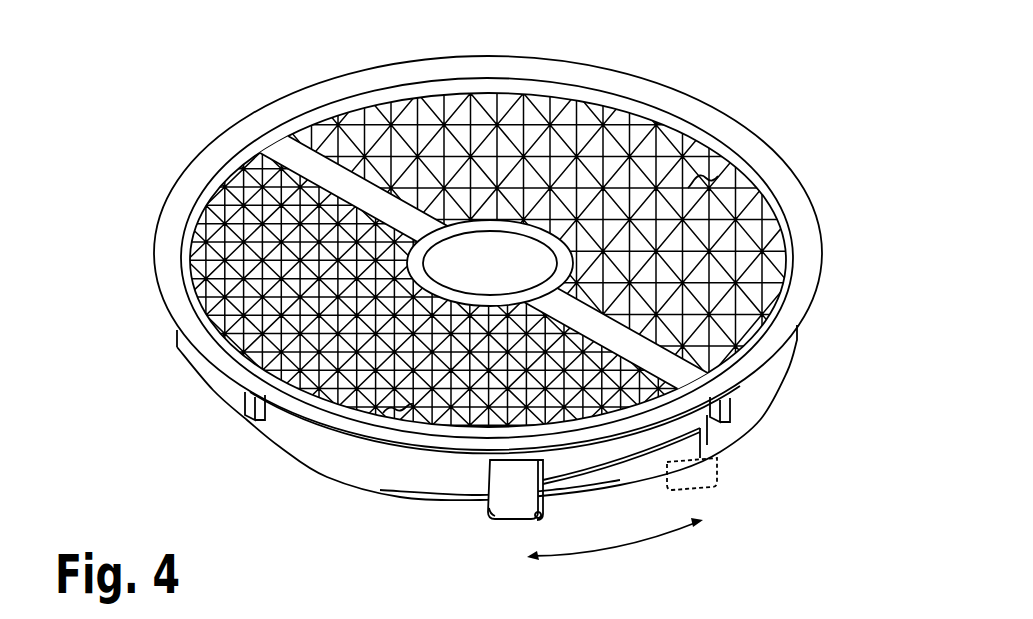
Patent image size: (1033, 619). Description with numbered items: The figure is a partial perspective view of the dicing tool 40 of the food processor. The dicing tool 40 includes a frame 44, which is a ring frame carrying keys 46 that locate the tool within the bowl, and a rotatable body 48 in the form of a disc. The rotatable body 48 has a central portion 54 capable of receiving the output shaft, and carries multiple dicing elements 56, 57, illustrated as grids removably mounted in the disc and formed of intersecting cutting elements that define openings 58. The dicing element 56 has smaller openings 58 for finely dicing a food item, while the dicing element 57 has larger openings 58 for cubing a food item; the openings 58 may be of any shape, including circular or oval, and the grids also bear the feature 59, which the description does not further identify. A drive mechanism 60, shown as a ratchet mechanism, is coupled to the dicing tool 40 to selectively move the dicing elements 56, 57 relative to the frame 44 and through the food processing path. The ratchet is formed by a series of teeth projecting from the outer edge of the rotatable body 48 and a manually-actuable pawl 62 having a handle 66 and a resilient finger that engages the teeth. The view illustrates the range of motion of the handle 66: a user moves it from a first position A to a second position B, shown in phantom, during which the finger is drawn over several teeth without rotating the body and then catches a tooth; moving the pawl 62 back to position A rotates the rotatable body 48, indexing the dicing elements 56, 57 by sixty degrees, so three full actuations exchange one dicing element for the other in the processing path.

The dicing tool 40 is at (180, 87).
The frame 44 is at (181, 367).
The keys 46 is at (247, 407).
The rotatable body 48 is at (683, 378).
The central portion 54 is at (477, 245).
The dicing element 56 is at (186, 234).
The dicing element 57 is at (625, 112).
The openings 58 is at (707, 176).
The second ribs 59 is at (718, 176).
The drive mechanism 60 is at (480, 468).
The pawl 62 is at (480, 521).
The handle 66 is at (535, 493).
The first position A is at (507, 508).
The second position B is at (713, 455).